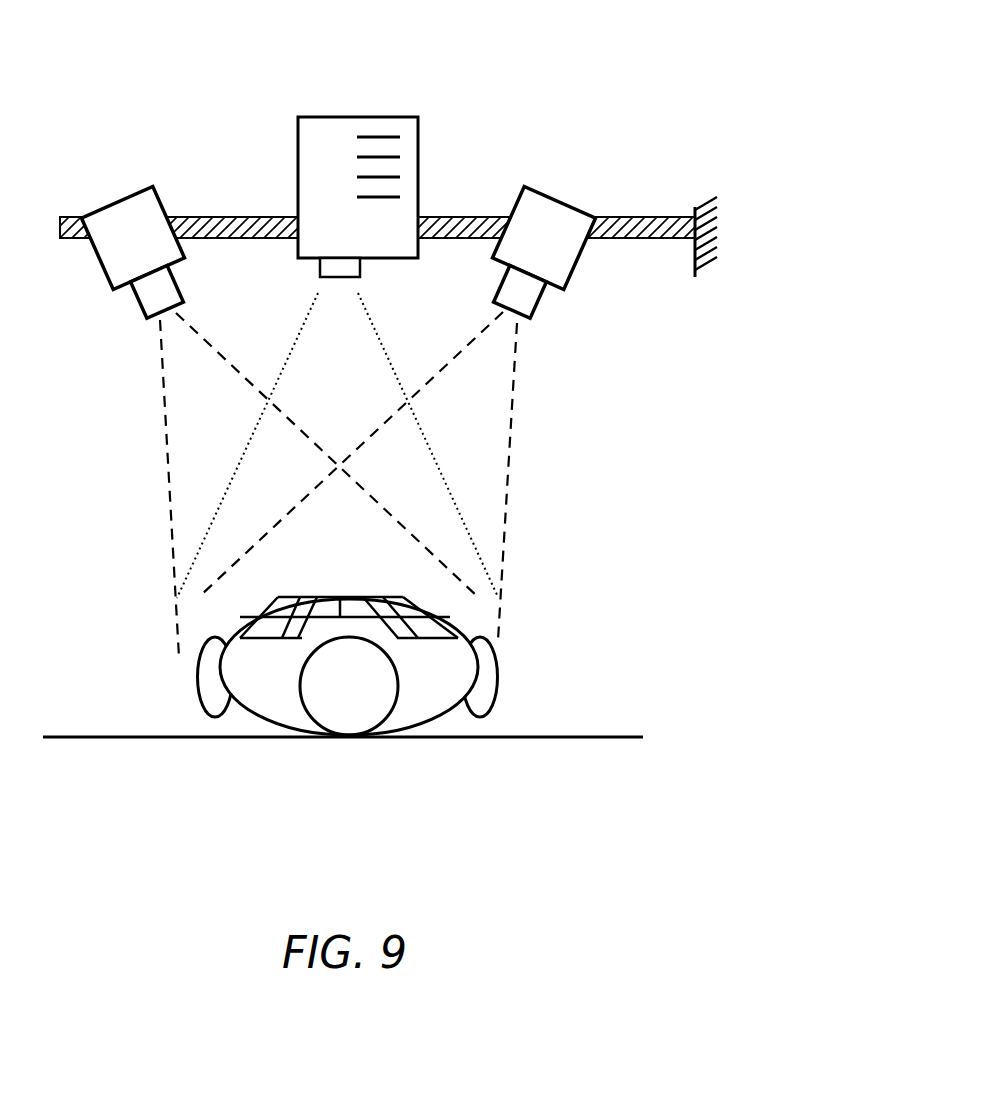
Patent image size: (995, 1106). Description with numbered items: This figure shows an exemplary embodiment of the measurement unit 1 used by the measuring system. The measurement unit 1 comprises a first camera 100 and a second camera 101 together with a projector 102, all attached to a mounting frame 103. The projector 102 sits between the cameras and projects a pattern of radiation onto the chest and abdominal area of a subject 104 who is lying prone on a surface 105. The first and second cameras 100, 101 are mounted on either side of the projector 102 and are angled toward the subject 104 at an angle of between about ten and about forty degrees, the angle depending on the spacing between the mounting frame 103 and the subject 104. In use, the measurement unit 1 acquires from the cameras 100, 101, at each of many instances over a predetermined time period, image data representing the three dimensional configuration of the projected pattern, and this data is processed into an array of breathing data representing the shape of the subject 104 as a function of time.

The measurement unit 1 is at (585, 90).
The first camera 100 is at (113, 201).
The second camera 101 is at (562, 201).
The projector 102 is at (298, 118).
The mounting frame 103 is at (635, 238).
The subject 104 is at (420, 700).
The surface 105 is at (150, 736).